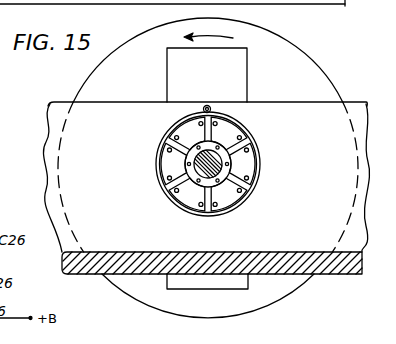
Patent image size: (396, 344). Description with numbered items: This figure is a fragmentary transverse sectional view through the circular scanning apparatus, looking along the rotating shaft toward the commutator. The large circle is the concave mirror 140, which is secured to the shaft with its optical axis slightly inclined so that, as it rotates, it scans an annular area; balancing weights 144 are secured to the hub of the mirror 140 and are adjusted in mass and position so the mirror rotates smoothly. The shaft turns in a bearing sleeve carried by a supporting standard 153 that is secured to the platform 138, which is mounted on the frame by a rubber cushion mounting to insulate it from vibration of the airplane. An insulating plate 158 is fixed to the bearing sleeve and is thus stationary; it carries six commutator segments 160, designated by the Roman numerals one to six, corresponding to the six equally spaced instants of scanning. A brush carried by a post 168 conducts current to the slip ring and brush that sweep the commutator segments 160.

The concave mirror 140 is at (290, 68).
The balancing weights 144 is at (244, 77).
The supporting standard 153 is at (314, 116).
The post 168 is at (207, 105).
The commutator segments 160 is at (237, 139).
The insulating plate 158 is at (257, 168).
The platform 138 is at (266, 260).